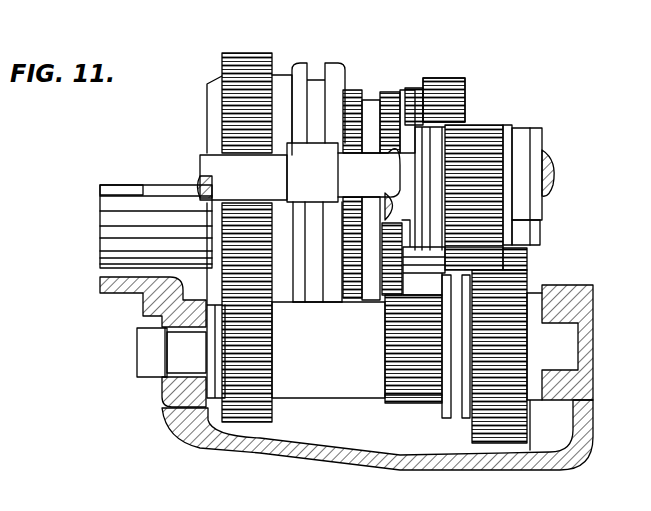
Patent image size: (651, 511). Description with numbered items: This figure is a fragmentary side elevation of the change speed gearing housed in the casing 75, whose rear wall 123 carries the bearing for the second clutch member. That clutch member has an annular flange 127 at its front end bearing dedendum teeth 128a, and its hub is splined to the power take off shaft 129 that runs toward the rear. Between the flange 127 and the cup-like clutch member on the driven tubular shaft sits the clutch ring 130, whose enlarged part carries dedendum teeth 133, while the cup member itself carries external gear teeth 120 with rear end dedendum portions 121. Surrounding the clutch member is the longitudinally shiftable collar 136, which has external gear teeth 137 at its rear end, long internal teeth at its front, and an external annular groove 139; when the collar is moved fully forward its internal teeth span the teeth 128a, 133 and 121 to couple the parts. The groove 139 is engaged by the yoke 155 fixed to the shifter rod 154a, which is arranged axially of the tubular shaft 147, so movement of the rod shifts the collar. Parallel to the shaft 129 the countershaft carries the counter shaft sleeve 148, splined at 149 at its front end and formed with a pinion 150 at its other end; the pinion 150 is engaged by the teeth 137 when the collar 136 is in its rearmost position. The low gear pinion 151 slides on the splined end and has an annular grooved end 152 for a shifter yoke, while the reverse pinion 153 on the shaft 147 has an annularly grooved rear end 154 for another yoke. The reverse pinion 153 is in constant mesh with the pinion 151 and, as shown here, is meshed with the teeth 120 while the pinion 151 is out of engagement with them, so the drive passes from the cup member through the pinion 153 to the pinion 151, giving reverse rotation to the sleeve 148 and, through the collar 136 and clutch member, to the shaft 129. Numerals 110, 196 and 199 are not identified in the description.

The casing 75 is at (186, 426).
The main shaft 110 is at (474, 82).
The gear teeth 120 is at (452, 78).
The rear end dedendum portions 121 is at (412, 88).
The rear wall 123 is at (168, 395).
The annular flange 127 is at (365, 73).
The dedendum teeth 128a is at (318, 172).
The power take off shaft 129 is at (150, 183).
The clutch ring 130 is at (372, 268).
The dedendum teeth 133 is at (380, 88).
The collar 136 is at (210, 76).
The external gear teeth 137 is at (238, 55).
The annular groove 139 is at (312, 62).
The shaft 147 is at (547, 156).
The counter shaft sleeve 148 is at (328, 350).
The spline 149 is at (392, 302).
The pinion 150 is at (272, 410).
The low gear pinion 151 is at (515, 280).
The annular grooved end 152 is at (456, 397).
The reverse pinion 153 is at (480, 140).
The annularly grooved rear end 154 is at (432, 140).
The shifter rod 154a is at (205, 163).
The yoke 155 is at (315, 265).
The bearing 196 is at (147, 352).
The gear hub 199 is at (402, 387).